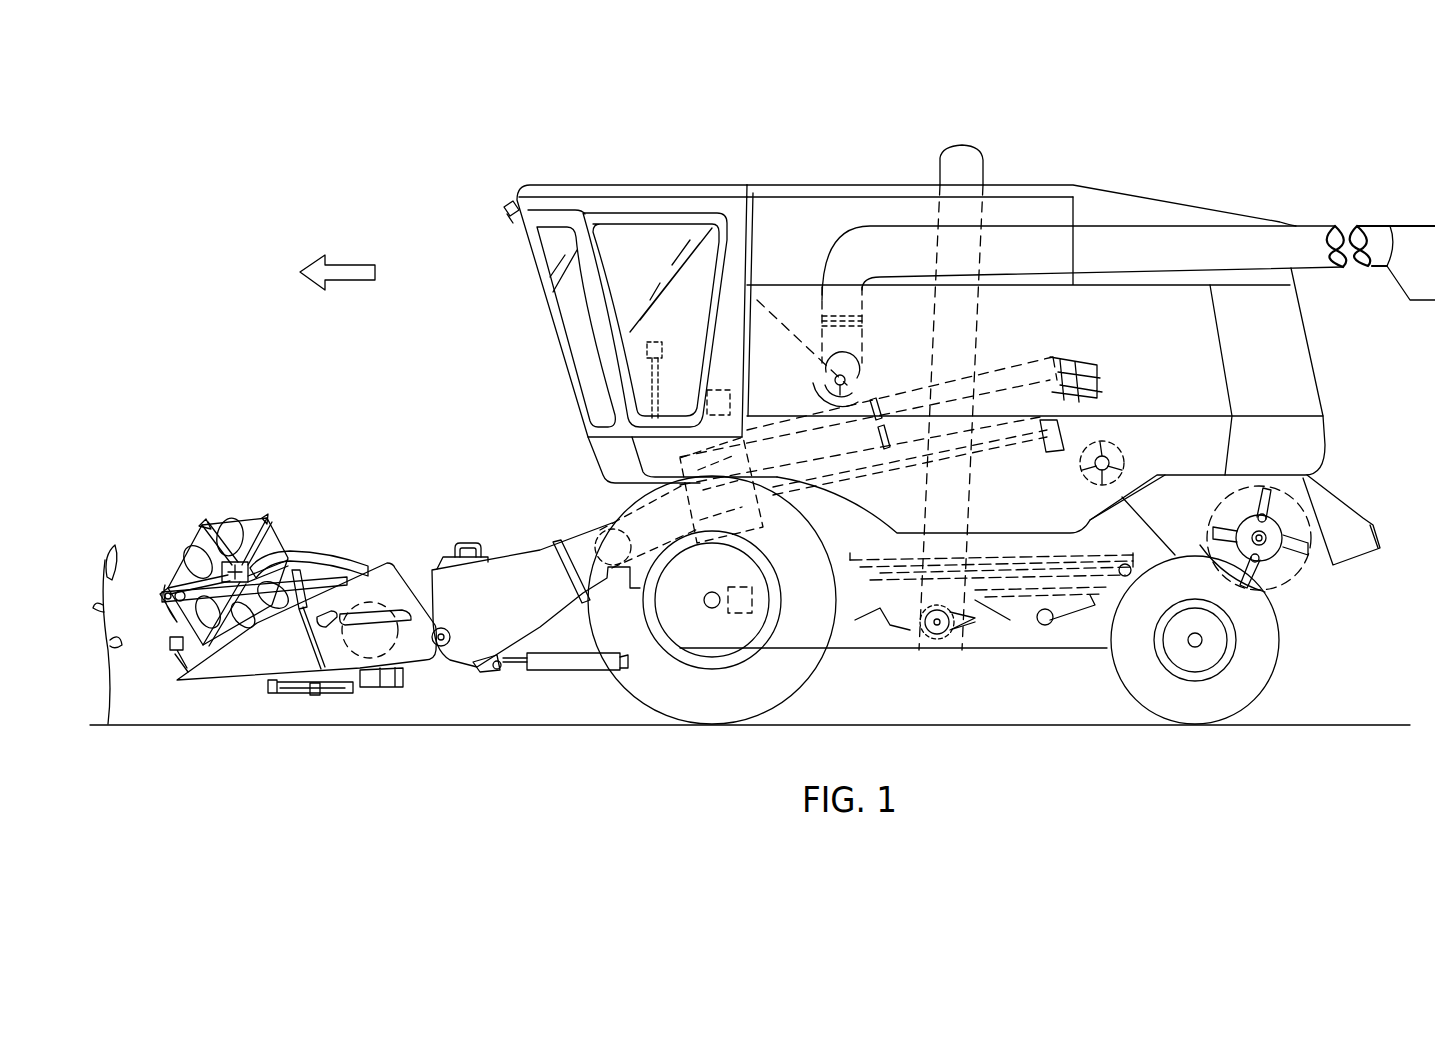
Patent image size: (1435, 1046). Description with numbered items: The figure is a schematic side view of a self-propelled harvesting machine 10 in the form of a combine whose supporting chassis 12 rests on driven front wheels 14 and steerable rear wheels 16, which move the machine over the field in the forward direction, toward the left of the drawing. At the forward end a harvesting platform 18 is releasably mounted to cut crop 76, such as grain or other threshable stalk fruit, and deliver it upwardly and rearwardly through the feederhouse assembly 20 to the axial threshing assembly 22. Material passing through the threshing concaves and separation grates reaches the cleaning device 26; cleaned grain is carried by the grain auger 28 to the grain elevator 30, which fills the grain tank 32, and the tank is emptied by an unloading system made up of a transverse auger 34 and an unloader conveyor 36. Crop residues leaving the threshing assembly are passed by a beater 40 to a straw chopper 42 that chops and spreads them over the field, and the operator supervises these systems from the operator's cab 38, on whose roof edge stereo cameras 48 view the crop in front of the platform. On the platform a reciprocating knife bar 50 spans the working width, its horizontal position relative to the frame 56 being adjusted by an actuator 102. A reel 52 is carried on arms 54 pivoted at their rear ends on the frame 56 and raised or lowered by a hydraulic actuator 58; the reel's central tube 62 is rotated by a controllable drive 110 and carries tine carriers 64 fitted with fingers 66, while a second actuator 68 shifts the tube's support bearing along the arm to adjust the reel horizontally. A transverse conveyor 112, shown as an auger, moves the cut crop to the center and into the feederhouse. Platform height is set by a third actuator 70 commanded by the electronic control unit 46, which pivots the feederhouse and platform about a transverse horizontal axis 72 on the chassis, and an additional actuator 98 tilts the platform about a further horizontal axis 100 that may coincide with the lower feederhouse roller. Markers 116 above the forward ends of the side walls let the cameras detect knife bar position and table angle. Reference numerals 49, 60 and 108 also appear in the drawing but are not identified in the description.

The harvesting machine 10 is at (416, 128).
The supporting chassis 12 is at (996, 650).
The front wheels 14 is at (716, 700).
The rear wheels 16 is at (1188, 690).
The harvesting platform 18 is at (364, 745).
The feederhouse assembly 20 is at (502, 585).
The axial threshing assembly 22 is at (1000, 360).
The cleaning device 26 is at (1015, 553).
The grain auger 28 is at (920, 650).
The grain elevator 30 is at (935, 300).
The grain tank 32 is at (840, 185).
The transverse auger 34 is at (830, 365).
The unloader conveyor 36 is at (1150, 226).
The operator's cab 38 is at (644, 185).
The beater 40 is at (1122, 448).
The straw chopper 42 is at (1310, 490).
The electronic control unit 46 is at (708, 402).
The stereo camera 48 is at (506, 222).
The display device 49 is at (650, 352).
The reciprocating knife bar 50 is at (267, 690).
The reel 52 is at (244, 560).
The arms 54 is at (345, 560).
The frame 56 is at (370, 690).
The actuator 58 is at (300, 560).
The reel arm 60 is at (228, 535).
The central tube 62 is at (243, 562).
The tine carriers 64 is at (160, 592).
The fingers 66 is at (172, 653).
The second actuator 68 is at (278, 548).
The third actuator 70 is at (560, 672).
The horizontal axis 72 is at (607, 523).
The crop 76 is at (105, 560).
The additional actuator 98 is at (465, 545).
The horizontal axis 100 is at (440, 650).
The actuator 102 is at (312, 698).
The feeder drum 108 is at (760, 635).
The controllable drive 110 is at (200, 525).
The transverse conveyor 112 is at (382, 565).
The markers 116 is at (172, 668).